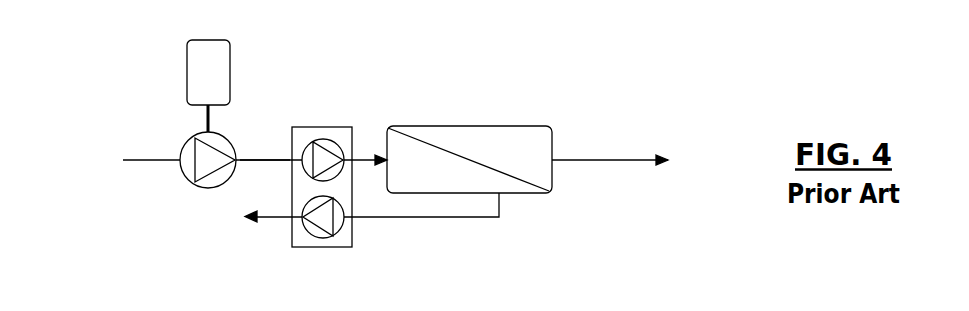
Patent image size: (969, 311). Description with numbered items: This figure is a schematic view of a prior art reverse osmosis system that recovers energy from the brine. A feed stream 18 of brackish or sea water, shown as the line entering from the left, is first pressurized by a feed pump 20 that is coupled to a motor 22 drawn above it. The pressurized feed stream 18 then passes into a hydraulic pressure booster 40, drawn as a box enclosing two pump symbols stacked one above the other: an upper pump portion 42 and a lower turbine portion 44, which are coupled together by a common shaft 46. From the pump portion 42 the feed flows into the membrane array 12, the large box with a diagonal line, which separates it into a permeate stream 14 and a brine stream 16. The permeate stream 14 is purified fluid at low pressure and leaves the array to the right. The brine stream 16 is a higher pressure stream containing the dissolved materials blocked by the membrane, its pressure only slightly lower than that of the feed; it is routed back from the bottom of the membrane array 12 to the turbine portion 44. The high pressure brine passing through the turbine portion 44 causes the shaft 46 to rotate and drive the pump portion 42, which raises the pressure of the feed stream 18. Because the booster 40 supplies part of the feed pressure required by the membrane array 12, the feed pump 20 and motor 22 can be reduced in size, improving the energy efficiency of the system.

The membrane array 12 is at (480, 126).
The permeate stream 14 is at (583, 160).
The brine stream 16 is at (500, 208).
The feed stream 18 is at (257, 160).
The feed pump 20 is at (195, 179).
The motor 22 is at (207, 38).
The hydraulic pressure booster 40 is at (342, 127).
The pump portion 42 is at (303, 150).
The turbine portion 44 is at (338, 235).
The common shaft 46 is at (325, 186).